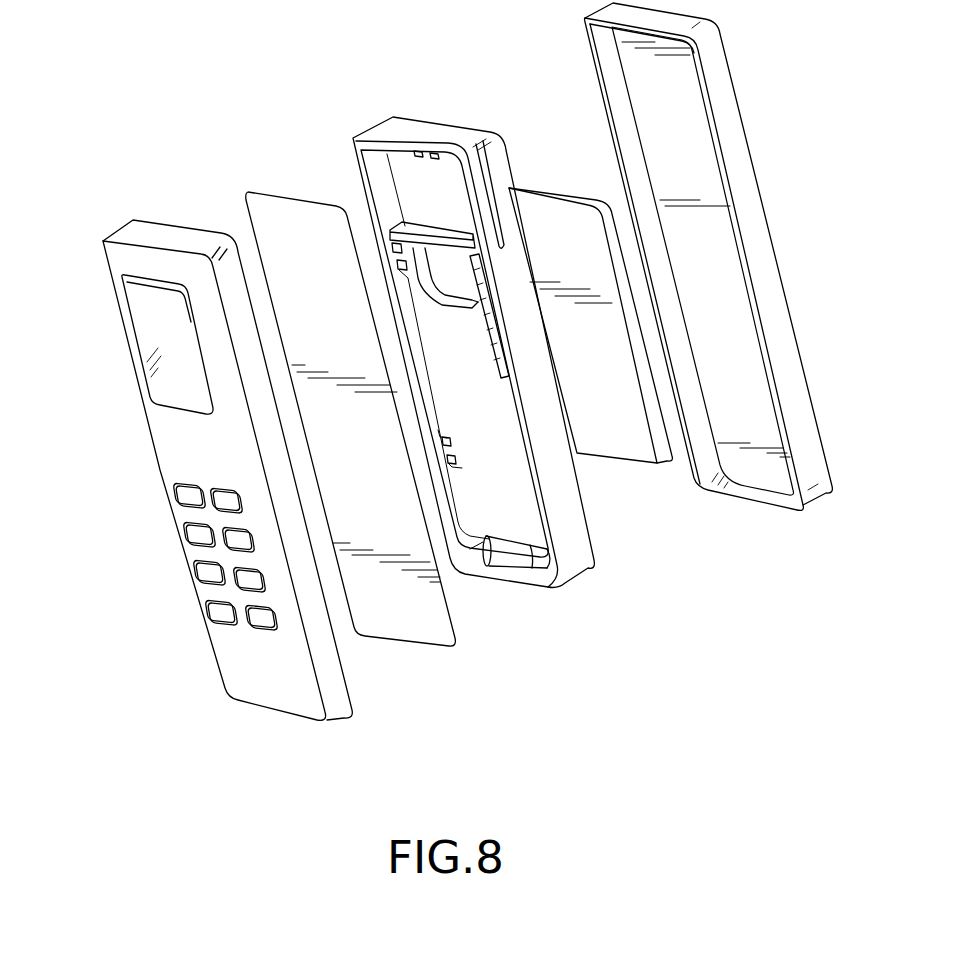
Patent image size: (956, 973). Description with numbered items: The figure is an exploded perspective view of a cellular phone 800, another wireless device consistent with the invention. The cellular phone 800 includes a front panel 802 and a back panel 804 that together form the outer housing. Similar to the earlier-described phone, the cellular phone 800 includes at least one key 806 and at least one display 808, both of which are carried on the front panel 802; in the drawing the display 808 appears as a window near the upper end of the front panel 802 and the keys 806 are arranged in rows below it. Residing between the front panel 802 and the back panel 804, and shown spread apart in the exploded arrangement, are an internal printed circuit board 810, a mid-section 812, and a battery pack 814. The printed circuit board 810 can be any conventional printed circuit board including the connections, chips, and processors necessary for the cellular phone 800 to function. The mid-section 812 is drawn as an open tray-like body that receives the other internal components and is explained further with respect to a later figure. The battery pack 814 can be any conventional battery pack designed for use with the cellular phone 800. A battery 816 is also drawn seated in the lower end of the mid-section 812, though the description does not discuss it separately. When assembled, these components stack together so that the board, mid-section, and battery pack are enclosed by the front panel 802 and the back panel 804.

The cellular phone 800 is at (685, 675).
The front panel 802 is at (287, 703).
The back panel 804 is at (742, 157).
The key 806 is at (197, 537).
The display 808 is at (187, 307).
The printed circuit board 810 is at (273, 190).
The mid-section 812 is at (588, 538).
The battery pack 814 is at (545, 187).
The battery 816 is at (515, 558).